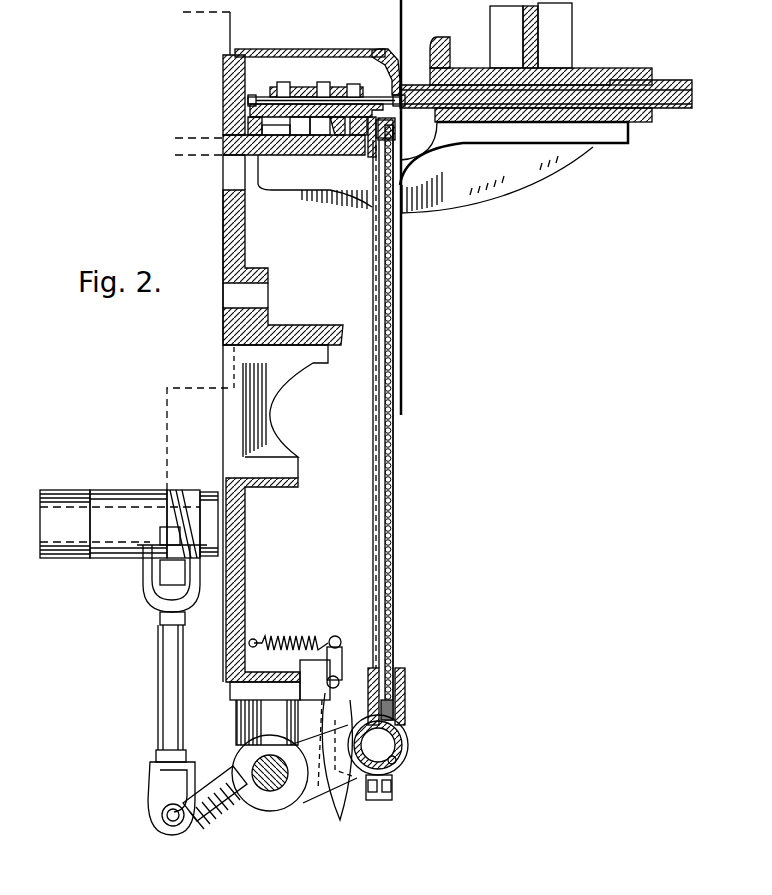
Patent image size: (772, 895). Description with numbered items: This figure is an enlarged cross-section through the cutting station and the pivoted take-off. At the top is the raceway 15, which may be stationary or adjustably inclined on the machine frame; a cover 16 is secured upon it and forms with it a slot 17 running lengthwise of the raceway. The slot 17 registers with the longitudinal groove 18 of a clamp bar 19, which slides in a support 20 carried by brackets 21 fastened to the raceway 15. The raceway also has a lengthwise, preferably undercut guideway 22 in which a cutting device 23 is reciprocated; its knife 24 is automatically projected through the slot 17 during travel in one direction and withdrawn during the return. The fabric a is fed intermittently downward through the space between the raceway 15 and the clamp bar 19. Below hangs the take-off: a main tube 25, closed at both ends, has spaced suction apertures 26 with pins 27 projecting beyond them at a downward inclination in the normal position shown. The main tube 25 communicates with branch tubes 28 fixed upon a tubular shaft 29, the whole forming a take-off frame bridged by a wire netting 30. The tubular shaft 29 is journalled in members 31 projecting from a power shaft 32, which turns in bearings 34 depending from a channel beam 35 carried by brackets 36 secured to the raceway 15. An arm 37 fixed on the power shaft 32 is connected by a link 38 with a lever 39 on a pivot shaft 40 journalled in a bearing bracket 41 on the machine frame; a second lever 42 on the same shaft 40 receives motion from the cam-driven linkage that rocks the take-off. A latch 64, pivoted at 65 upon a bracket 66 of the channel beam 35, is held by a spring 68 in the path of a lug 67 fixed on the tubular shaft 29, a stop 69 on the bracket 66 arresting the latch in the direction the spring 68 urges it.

The raceway 15 is at (224, 102).
The cover 16 is at (322, 49).
The slot 17 is at (385, 52).
The longitudinal groove 18 is at (401, 94).
The clamp bar 19 is at (686, 80).
The support 20 is at (620, 68).
The brackets 21 is at (492, 190).
The guideway 22 is at (252, 125).
The cutting device 23 is at (255, 100).
The knife 24 is at (375, 95).
The main tube 25 is at (352, 152).
The suction apertures 26 is at (395, 137).
The pins 27 is at (370, 150).
The branch tubes 28 is at (372, 534).
The tubular shaft 29 is at (400, 762).
The wire netting 30 is at (396, 492).
The members 31 is at (318, 800).
The power shaft 32 is at (270, 795).
The bearings 34 is at (240, 738).
The channel beam 35 is at (243, 568).
The brackets 36 is at (232, 426).
The arm 37 is at (236, 815).
The link 38 is at (170, 703).
The lever 39 is at (182, 500).
The pivot shaft 40 is at (125, 520).
The bearing bracket 41 is at (120, 492).
The second lever 42 is at (57, 492).
The latch 64 is at (322, 700).
The pivot 65 is at (340, 684).
The bracket 66 is at (302, 684).
The lug 67 is at (352, 782).
The spring 68 is at (292, 640).
The stop 69 is at (338, 672).
The fabric a is at (403, 252).